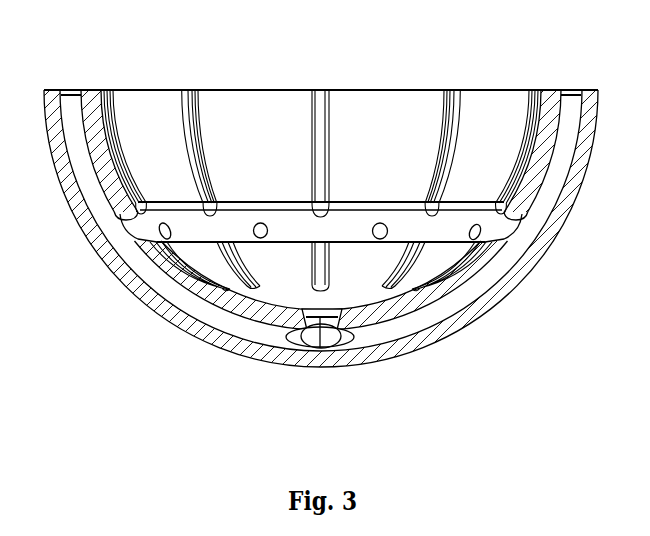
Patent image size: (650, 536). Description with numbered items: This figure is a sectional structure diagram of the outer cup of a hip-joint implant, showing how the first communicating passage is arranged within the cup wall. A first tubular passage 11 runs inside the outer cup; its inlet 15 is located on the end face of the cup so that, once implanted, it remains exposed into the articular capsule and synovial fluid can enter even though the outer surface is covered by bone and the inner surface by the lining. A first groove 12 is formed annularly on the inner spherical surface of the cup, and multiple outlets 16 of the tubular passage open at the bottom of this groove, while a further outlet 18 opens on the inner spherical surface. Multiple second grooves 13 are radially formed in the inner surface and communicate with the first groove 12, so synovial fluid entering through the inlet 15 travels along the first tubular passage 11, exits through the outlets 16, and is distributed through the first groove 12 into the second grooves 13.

The first tubular passage 11 is at (127, 243).
The first groove 12 is at (500, 227).
The second grooves 13 is at (447, 147).
The inlet of the first tubular passage 15 is at (72, 92).
The outlets of the first tubular passage 16 is at (383, 235).
The outlet of the first tubular passage 18 is at (320, 318).